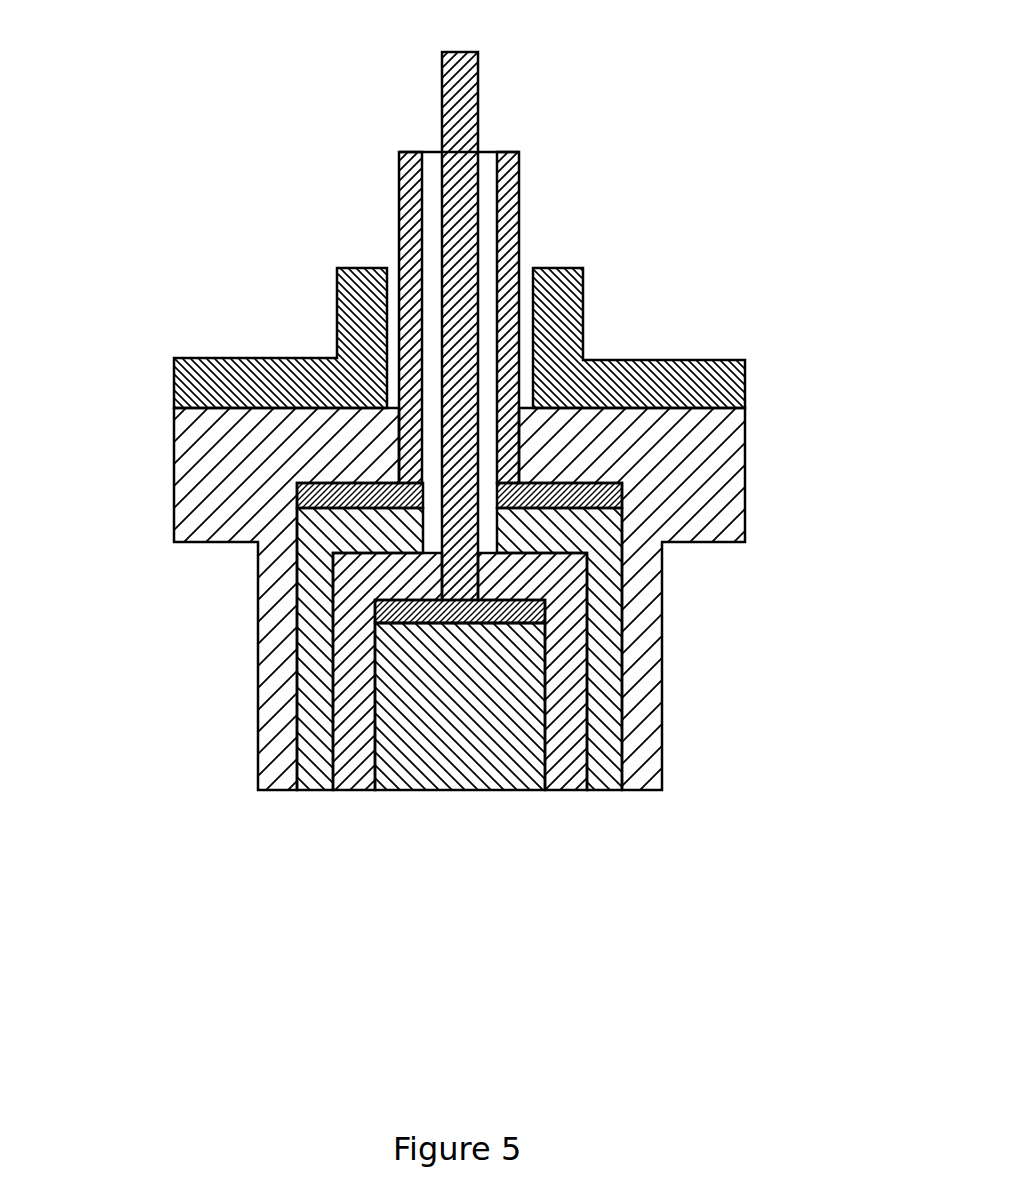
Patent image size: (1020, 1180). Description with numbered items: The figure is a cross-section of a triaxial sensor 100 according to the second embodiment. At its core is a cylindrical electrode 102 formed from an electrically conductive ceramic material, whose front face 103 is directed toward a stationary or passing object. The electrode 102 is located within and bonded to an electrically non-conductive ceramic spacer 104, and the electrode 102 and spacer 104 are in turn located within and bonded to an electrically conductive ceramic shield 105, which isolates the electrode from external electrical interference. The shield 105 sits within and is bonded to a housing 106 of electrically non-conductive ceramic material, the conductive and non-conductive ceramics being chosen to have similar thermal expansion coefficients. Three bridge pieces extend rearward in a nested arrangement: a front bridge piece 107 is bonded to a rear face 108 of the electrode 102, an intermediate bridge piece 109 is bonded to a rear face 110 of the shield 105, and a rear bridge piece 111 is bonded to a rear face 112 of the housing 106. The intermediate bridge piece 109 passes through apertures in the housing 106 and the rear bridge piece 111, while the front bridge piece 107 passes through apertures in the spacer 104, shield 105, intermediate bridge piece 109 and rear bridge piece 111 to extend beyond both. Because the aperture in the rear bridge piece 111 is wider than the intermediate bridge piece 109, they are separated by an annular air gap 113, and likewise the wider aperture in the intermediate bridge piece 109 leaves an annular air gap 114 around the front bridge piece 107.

The triaxial sensor 100 is at (632, 275).
The cylindrical electrode 102 is at (487, 760).
The front face 103 is at (393, 802).
The spacer 104 is at (560, 760).
The shield 105 is at (607, 703).
The housing 106 is at (708, 468).
The front bridge piece 107 is at (525, 610).
The rear face 108 is at (400, 634).
The intermediate bridge piece 109 is at (315, 495).
The rear face 110 is at (350, 525).
The rear bridge piece 111 is at (682, 383).
The rear face 112 is at (243, 396).
The annular air gap 113 is at (392, 340).
The annular air gap 114 is at (486, 210).